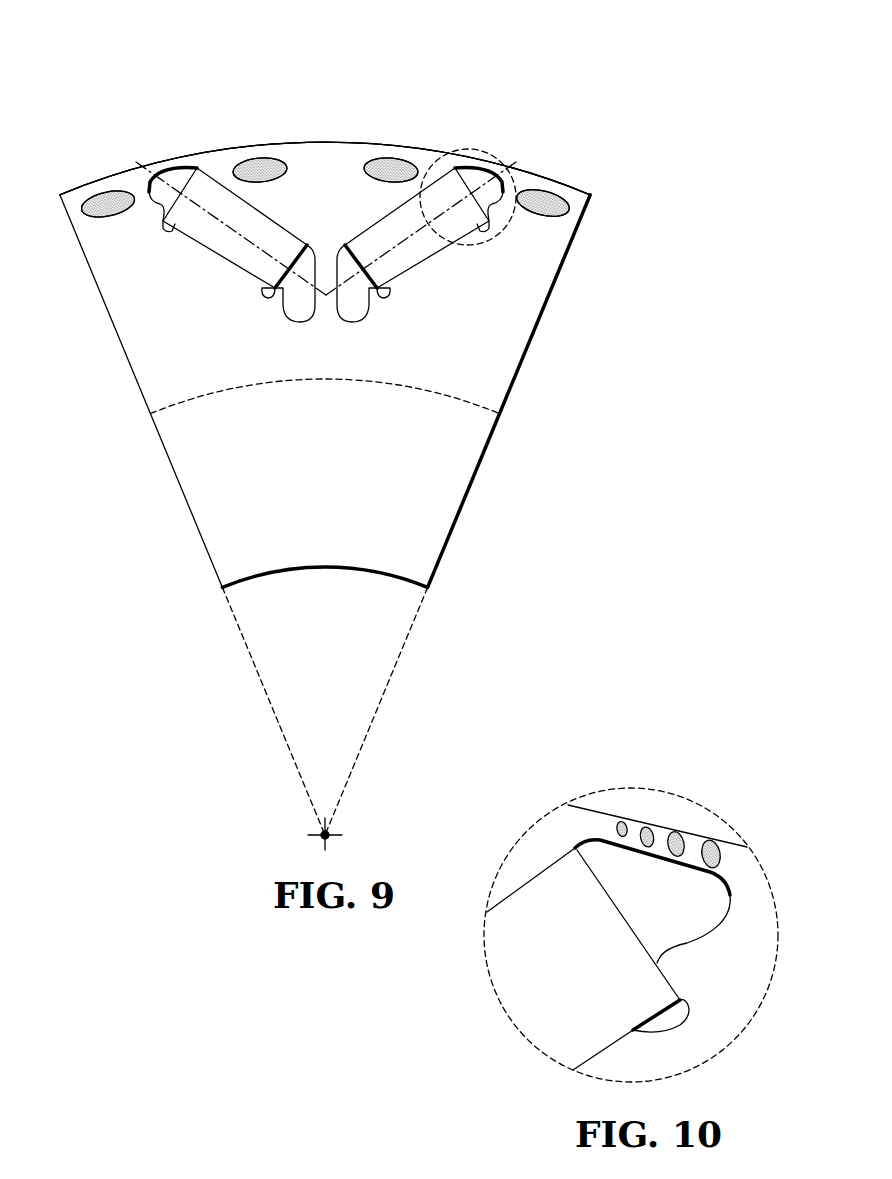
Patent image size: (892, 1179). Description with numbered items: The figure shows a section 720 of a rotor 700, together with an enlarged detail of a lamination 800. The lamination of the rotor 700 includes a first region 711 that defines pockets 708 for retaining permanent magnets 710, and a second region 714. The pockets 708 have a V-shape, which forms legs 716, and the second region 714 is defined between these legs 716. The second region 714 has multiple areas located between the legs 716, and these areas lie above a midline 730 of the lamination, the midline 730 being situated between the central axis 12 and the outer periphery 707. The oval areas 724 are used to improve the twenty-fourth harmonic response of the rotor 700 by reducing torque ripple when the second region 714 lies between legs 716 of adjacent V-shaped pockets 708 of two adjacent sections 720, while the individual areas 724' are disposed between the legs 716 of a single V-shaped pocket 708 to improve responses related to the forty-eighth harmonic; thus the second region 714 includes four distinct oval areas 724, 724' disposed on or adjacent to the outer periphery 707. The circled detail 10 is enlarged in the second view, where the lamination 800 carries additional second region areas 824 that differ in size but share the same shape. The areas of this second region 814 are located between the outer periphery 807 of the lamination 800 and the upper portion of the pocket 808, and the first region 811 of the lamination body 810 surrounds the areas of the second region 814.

In FIG. 9, the rotor 700 is at (412, 58).
In FIG. 9, the section 720 is at (325, 106).
In FIG. 9, the outer periphery 707 is at (322, 140).
In FIG. 9, the first region 711 is at (218, 492).
In FIG. 9, the midline 730 is at (310, 382).
In FIG. 9, the central axis 12 is at (330, 830).
In FIG. 9, the second region 714 is at (118, 203).
In FIG. 9, the oval area 724 is at (347, 179).
In FIG. 9, the individual area 724' is at (323, 129).
In FIG. 9, the permanent magnet 710 is at (224, 242).
In FIG. 9, the pocket 708 is at (495, 190).
In FIG. 9, the leg 716 is at (400, 237).
In FIG. 9, the detail region 10 is at (465, 148).
In FIG. 10, the lamination 800 is at (695, 763).
In FIG. 10, the outer periphery 807 is at (597, 808).
In FIG. 10, the rotor body 810 is at (543, 978).
In FIG. 10, the pocket 808 is at (707, 910).
In FIG. 10, the first region 811 is at (694, 975).
In FIG. 10, the second region area 824 is at (647, 827).
In FIG. 10, the second region 814 is at (711, 840).